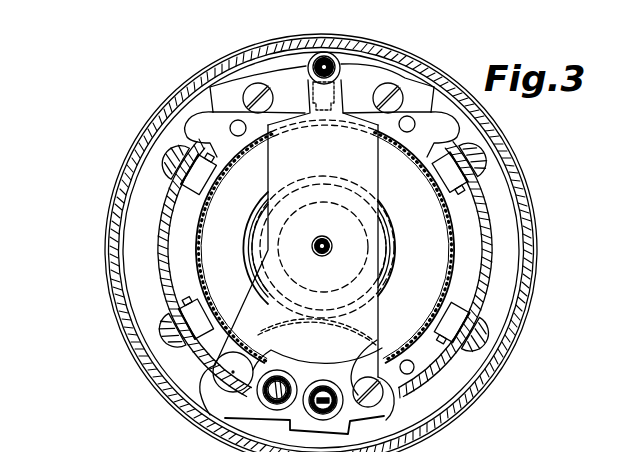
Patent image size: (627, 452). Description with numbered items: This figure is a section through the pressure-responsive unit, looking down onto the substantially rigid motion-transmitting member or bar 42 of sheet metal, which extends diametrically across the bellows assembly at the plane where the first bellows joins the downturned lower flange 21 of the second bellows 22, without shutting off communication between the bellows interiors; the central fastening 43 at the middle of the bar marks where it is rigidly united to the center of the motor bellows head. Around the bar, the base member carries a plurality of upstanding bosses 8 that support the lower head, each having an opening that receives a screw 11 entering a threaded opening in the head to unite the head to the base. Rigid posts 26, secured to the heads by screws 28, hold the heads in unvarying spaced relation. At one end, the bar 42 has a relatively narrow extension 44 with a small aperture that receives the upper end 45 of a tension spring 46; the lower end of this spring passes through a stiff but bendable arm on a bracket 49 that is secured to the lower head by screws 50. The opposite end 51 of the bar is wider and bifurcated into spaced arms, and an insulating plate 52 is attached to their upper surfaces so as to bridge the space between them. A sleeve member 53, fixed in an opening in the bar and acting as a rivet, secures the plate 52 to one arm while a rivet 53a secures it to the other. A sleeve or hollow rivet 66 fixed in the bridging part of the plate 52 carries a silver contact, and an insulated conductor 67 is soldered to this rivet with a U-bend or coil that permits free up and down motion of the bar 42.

The upstanding bosses 8 is at (197, 103).
The screws 11 is at (414, 118).
The downturned lower flange 21 is at (452, 252).
The second bellows 22 is at (403, 314).
The rigid posts 26 is at (494, 255).
The screws 28 is at (490, 160).
The motion-transmitting member or bar 42 is at (379, 300).
The pivot screw 43 is at (313, 253).
The relatively narrow extension 44 is at (343, 88).
The upper end of tension spring 45 is at (338, 85).
The tension spring 46 is at (303, 72).
The bracket 49 is at (255, 85).
The screws 50 is at (243, 88).
The opposite end of transmission member 51 is at (368, 353).
The insulating plate 52 is at (225, 420).
The sleeve member 53 is at (305, 451).
The rivet 53a is at (233, 372).
The sleeve or hollow rivet 66 is at (282, 372).
The insulated conductor 67 is at (252, 340).